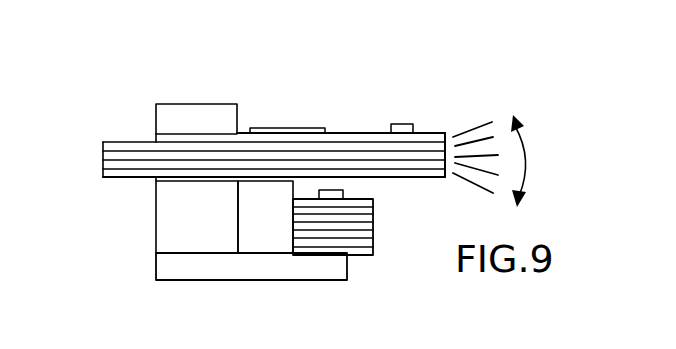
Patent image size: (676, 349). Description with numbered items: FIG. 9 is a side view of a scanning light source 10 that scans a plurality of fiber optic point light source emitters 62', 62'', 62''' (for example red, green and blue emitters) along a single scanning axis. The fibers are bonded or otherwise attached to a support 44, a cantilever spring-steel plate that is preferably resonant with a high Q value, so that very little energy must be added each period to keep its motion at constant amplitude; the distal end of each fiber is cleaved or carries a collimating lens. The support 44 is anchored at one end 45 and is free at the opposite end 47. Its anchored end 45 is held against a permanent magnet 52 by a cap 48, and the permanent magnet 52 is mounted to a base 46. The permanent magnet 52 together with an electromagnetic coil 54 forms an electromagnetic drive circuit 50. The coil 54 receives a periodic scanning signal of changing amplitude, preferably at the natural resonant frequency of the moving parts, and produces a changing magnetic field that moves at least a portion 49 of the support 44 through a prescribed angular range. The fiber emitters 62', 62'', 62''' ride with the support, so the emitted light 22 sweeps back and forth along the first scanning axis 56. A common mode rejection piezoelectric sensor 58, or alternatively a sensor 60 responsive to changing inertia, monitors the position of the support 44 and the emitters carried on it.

The optical switching device 10 is at (320, 58).
The emitted light 22 is at (495, 98).
The support 44 is at (346, 132).
The anchored end 45 is at (148, 141).
The base 46 is at (156, 266).
The free end 47 is at (445, 179).
The cap 48 is at (196, 103).
The portion of the support 49 is at (440, 108).
The electromagnetic drive circuit 50 is at (132, 227).
The permanent magnet 52 is at (238, 204).
The electromagnetic coil 54 is at (373, 220).
The first scanning axis 56 is at (527, 157).
The common mode rejection piezoelectric sensor 58 is at (282, 127).
The sensor responsive to changing inertia 60 is at (398, 124).
The fiber optic point light source emitter 62' is at (230, 126).
The fiber optic point light source emitter 62'' is at (230, 162).
The fiber optic point light source emitter 62''' is at (255, 191).